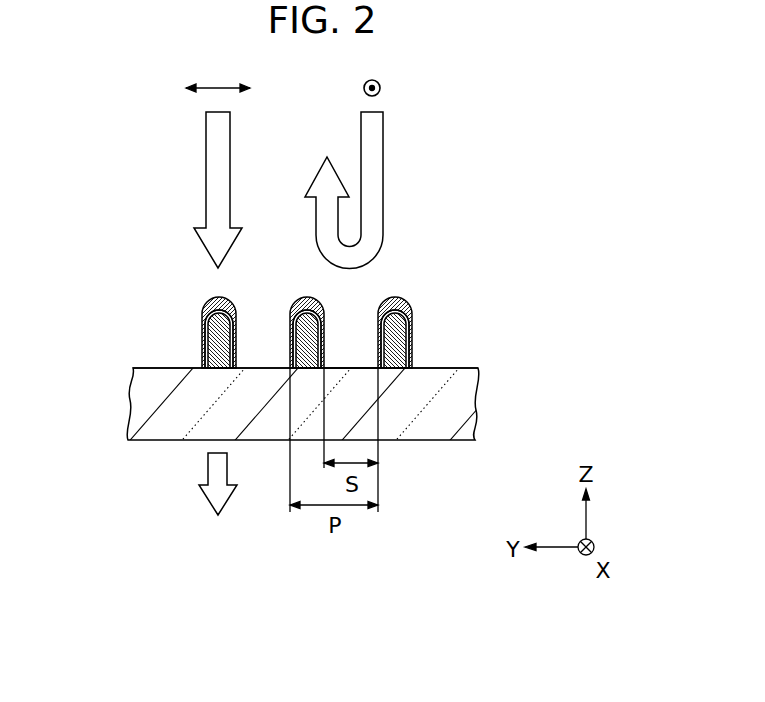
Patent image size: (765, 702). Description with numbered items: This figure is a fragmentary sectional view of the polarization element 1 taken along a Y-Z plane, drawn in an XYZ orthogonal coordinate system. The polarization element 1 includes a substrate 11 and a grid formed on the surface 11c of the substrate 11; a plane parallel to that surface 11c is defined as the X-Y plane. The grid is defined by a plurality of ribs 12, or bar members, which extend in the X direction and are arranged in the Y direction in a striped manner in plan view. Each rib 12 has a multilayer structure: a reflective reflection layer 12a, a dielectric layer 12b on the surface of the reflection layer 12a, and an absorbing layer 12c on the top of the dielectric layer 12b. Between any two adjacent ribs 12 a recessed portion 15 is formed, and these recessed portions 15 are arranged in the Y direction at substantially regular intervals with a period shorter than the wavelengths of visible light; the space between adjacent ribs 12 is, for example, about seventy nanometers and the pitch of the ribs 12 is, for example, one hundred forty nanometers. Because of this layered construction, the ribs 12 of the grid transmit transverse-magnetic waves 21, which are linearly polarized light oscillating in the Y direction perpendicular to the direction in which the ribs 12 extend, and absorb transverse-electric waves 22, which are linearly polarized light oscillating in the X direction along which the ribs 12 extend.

The polarization element 1 is at (598, 144).
The substrate 11 is at (473, 402).
The surface of the substrate 11c is at (437, 367).
The rib 12 is at (236, 316).
The reflection layer 12a is at (260, 340).
The dielectric layer 12b is at (205, 310).
The absorbing layer 12c is at (207, 301).
The recessed portion 15 is at (348, 362).
The transverse-magnetic wave 21 is at (222, 136).
The transverse-electric wave 22 is at (377, 136).